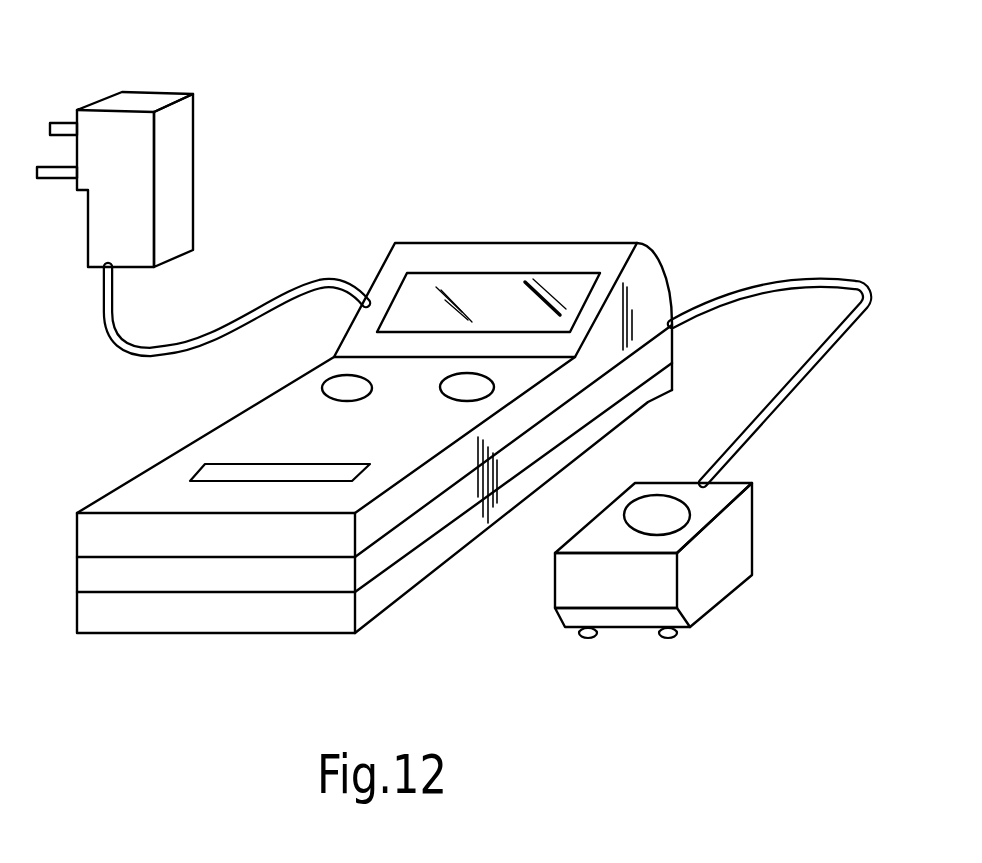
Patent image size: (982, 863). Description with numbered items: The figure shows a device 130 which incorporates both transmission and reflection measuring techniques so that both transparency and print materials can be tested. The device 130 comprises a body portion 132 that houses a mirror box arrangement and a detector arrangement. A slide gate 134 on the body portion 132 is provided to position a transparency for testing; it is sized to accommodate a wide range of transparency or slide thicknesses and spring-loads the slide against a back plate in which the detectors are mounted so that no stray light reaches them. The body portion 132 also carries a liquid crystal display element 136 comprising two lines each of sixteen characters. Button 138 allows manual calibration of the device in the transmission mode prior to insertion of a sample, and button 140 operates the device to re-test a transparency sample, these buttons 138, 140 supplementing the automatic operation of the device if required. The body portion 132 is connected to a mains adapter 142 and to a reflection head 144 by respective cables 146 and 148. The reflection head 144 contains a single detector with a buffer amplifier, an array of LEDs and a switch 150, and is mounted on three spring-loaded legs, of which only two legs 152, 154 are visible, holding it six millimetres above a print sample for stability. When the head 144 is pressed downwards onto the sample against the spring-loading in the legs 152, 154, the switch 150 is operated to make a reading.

The device 130 is at (428, 349).
The body portion 132 is at (210, 603).
The slide gate 134 is at (222, 465).
The liquid crystal display (LCD) element 136 is at (480, 290).
The button 138 is at (478, 387).
The button 140 is at (347, 390).
The mains adapter 142 is at (182, 133).
The reflection head 144 is at (665, 557).
The cable 146 is at (177, 352).
The cable 148 is at (822, 273).
The switch 150 is at (665, 517).
The leg 152 is at (668, 648).
The leg 154 is at (579, 646).